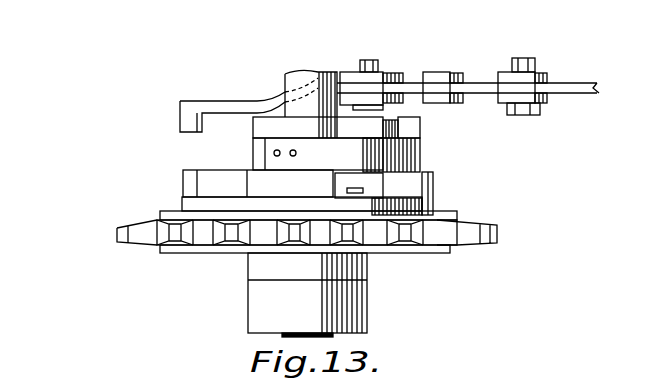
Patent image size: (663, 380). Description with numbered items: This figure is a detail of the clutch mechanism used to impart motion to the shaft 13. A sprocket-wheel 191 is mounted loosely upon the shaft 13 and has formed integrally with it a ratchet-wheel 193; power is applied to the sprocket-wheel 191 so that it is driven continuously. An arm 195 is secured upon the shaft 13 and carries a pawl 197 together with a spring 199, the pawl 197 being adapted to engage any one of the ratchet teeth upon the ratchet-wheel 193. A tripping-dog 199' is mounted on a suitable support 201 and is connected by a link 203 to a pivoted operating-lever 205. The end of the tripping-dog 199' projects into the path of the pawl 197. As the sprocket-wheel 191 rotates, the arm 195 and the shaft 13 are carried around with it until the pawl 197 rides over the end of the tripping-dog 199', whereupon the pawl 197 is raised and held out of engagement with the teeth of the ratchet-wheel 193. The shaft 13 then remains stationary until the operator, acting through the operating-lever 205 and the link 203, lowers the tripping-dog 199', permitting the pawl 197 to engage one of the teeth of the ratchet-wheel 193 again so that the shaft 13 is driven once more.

The shaft 13 is at (306, 70).
The sprocket-wheel 191 is at (205, 230).
The ratchet-wheel 193 is at (197, 183).
The arm 195 is at (257, 153).
The pawl 197 is at (410, 125).
The spring 199 is at (437, 162).
The tripping-dog 199' is at (232, 101).
The support 201 is at (380, 63).
The link 203 is at (451, 75).
The operating-lever 205 is at (571, 96).